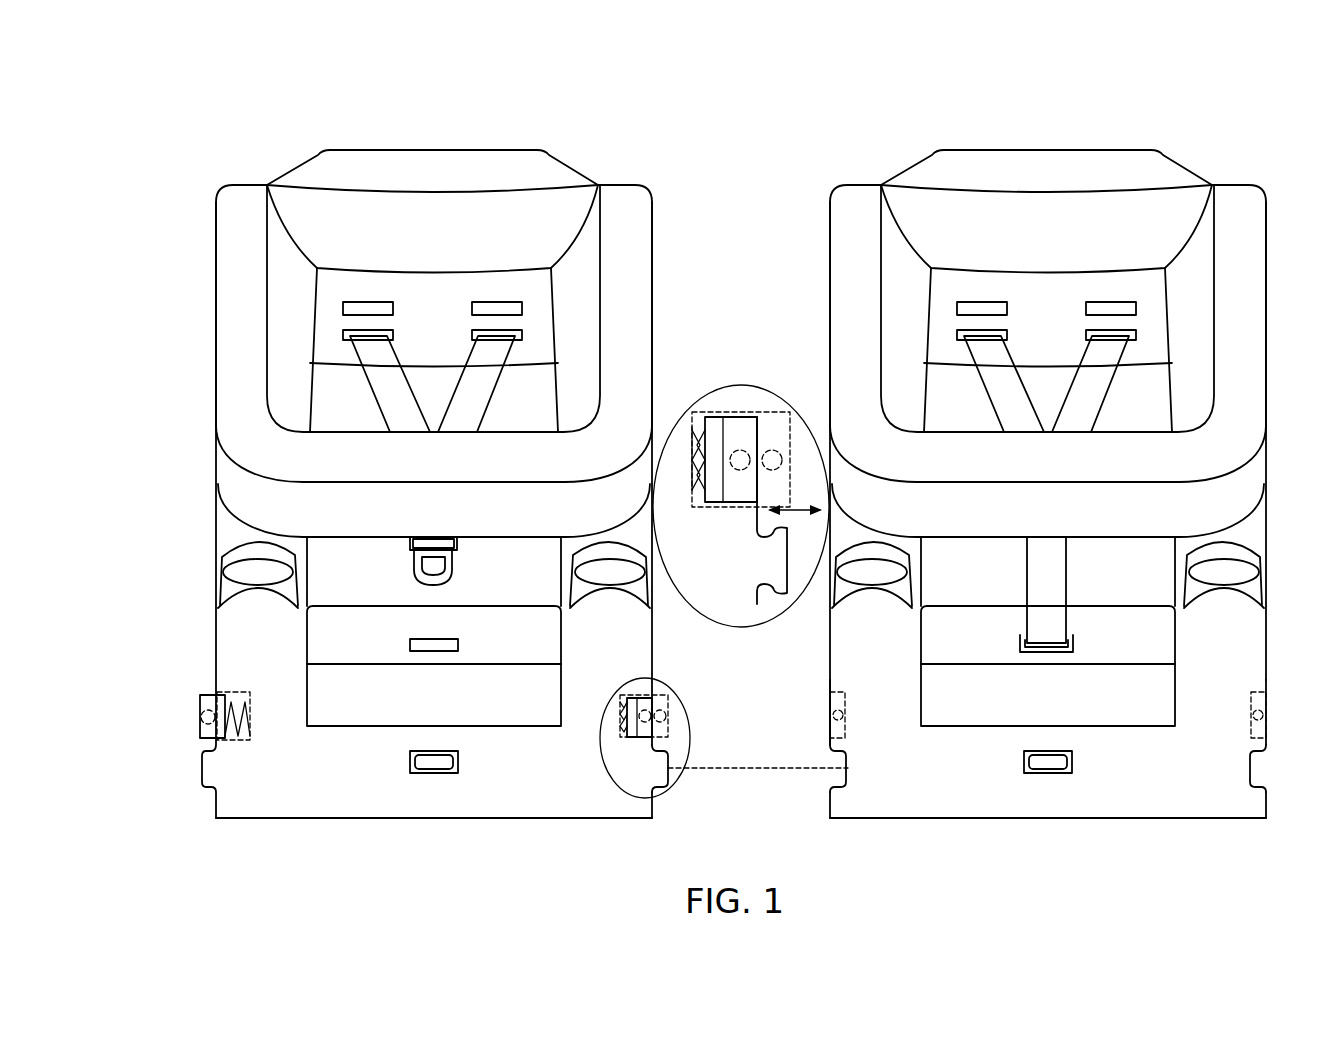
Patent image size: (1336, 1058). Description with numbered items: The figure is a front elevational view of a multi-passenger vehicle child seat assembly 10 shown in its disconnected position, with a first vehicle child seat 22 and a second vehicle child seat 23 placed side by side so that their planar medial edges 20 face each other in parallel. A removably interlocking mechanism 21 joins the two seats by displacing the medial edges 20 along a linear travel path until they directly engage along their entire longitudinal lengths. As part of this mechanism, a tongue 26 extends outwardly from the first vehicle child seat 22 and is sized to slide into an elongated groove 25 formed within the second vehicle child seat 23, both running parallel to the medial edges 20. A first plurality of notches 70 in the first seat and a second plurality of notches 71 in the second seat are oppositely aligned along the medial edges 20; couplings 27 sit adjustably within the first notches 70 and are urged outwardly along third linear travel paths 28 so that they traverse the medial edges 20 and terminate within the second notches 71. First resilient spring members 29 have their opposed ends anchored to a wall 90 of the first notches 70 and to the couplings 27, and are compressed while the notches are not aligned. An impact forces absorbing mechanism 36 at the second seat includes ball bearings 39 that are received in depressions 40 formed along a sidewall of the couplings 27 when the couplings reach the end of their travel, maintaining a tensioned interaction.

The multi-passenger vehicle child seat assembly 10 is at (1238, 164).
The planar medial edges 20 is at (214, 581).
The removably interlocking mechanism 21 is at (230, 662).
The first vehicle child seat 22 is at (433, 836).
The second vehicle child seat 23 is at (1075, 836).
The elongated groove 25 is at (843, 772).
The tongue 26 is at (662, 772).
The couplings 27 is at (200, 697).
The third linear travel paths 28 is at (793, 513).
The first resilient spring members 29 is at (237, 733).
The impact forces absorbing mechanism 36 is at (818, 702).
The ball bearings 39 is at (832, 715).
The depressions 40 is at (203, 717).
The first plurality of notches 70 is at (242, 733).
The second plurality of notches 71 is at (845, 715).
The wall 90 is at (690, 420).